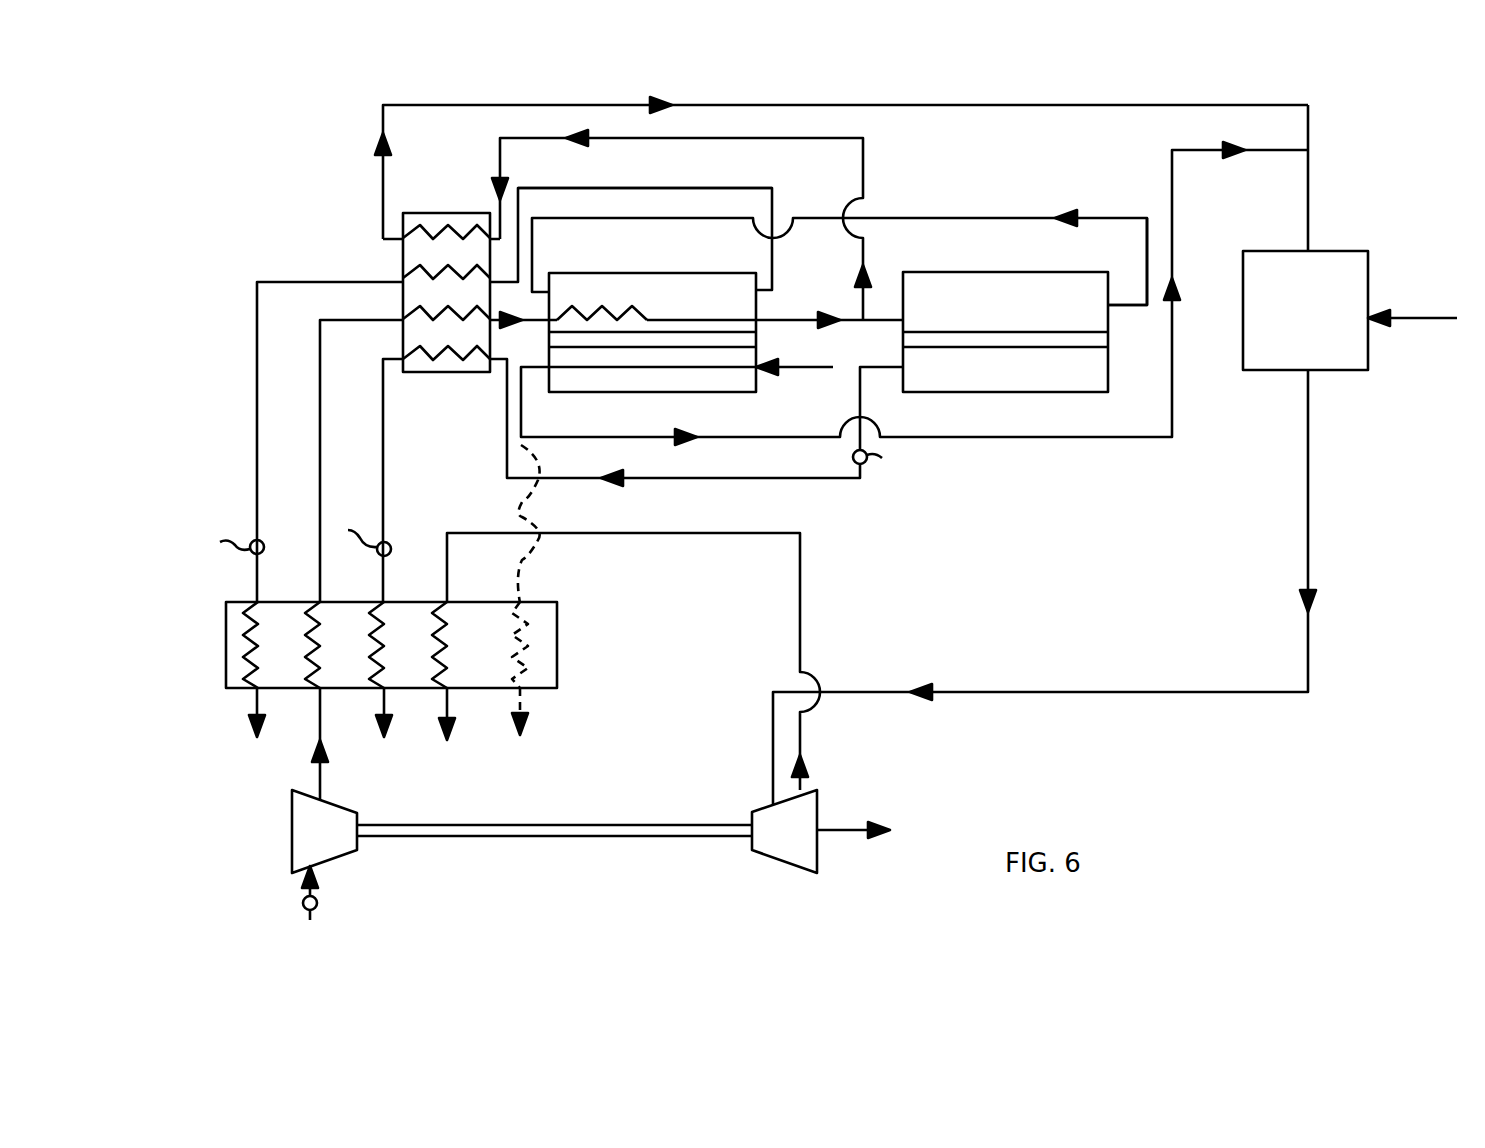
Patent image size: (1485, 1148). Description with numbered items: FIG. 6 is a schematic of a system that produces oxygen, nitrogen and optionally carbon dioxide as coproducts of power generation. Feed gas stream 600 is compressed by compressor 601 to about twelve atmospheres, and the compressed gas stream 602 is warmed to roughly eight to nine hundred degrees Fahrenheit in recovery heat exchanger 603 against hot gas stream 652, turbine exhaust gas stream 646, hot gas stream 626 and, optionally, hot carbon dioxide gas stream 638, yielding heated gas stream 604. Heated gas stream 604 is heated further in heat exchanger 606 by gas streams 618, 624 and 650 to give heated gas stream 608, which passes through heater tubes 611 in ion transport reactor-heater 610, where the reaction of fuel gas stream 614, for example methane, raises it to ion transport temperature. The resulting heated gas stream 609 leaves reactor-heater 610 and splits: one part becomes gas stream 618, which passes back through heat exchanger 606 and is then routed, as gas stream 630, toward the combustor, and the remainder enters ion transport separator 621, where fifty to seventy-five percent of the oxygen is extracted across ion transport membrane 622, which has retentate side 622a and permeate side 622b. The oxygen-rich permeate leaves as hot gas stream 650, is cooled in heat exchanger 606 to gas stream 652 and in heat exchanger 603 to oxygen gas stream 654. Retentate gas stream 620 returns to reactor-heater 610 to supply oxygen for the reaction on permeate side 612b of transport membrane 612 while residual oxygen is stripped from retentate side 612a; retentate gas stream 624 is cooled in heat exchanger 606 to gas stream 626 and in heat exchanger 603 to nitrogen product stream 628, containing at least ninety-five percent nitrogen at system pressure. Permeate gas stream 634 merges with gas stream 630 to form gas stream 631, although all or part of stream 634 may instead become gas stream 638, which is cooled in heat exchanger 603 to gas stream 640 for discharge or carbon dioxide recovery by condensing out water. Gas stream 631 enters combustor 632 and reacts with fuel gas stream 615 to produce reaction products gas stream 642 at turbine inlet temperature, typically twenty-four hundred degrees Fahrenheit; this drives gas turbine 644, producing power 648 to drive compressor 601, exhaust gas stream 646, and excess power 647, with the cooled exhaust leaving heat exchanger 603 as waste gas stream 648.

The feed gas stream 600 is at (322, 888).
The compressor 601 is at (290, 813).
The compressed gas stream 602 is at (323, 783).
The recovery heat exchanger 603 is at (557, 632).
The heated gas stream 604 is at (320, 403).
The heat exchanger 606 is at (417, 373).
The heated gas stream 608 is at (527, 322).
The heated gas stream 609 is at (787, 317).
The ion transport reactor-heater 610 is at (570, 273).
The heater tubes 611 is at (615, 310).
The transport membrane 612 is at (696, 311).
The retentate side 612a is at (730, 332).
The permeate side 612b is at (677, 348).
The fuel gas stream 614 is at (810, 370).
The fuel gas stream 615 is at (1412, 320).
The gas stream 618 is at (867, 248).
The retentate gas stream 620 is at (660, 217).
The ion transport separator 621 is at (1067, 270).
The ion transport membrane 622 is at (1071, 345).
The retentate side 622a is at (1003, 330).
The permeate side 622b is at (1032, 348).
The retentate gas stream 624 is at (735, 188).
The hot gas stream 626 is at (320, 280).
The nitrogen product stream 628 is at (257, 708).
The gas stream 630 is at (487, 103).
The gas stream 631 is at (1313, 176).
The combustor 632 is at (1370, 281).
The permeate gas stream 634 is at (521, 415).
The hot carbon dioxide gas stream 638 is at (527, 508).
The gas stream 640 is at (520, 697).
The reaction products gas stream 642 is at (1308, 505).
The gas turbine 644 is at (817, 805).
The turbine exhaust gas stream 646 is at (800, 578).
The excess power 647 is at (842, 830).
The power 648 is at (448, 710).
The hot gas stream 650 is at (797, 480).
The hot gas stream 652 is at (383, 463).
The oxygen gas stream 654 is at (384, 707).